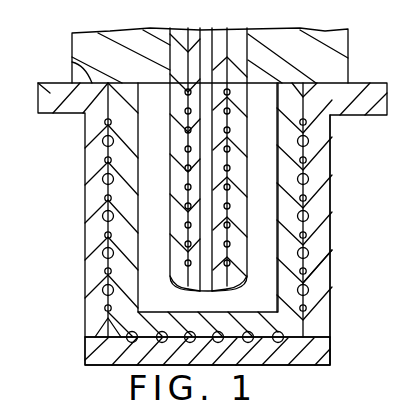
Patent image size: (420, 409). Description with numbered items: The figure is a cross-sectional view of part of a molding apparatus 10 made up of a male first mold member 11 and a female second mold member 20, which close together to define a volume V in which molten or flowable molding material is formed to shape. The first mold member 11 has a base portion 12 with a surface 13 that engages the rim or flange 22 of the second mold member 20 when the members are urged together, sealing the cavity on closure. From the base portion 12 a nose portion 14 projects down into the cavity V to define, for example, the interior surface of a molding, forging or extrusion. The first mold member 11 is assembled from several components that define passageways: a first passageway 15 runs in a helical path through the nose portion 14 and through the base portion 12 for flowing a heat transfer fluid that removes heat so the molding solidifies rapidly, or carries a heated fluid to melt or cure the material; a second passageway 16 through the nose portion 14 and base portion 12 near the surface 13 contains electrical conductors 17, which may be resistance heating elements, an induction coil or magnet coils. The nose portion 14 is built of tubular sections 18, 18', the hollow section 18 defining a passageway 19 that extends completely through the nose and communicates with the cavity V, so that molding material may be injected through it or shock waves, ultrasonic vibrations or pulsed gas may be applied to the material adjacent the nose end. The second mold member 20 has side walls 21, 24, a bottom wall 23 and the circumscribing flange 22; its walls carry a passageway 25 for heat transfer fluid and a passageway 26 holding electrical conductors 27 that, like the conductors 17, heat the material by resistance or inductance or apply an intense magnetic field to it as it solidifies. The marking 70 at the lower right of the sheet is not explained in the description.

The molding apparatus 10 is at (354, 53).
The first mold member 11 is at (348, 30).
The base portion 12 is at (342, 69).
The surface 13 is at (72, 58).
The nose portion 14 is at (318, 262).
The first passageway 15 is at (170, 172).
The second passageway 16 is at (187, 201).
The electrical conductors 17 is at (176, 284).
The section 18 is at (183, 295).
The section 18' is at (252, 278).
The passageway 19 is at (215, 291).
The second mold member 20 is at (331, 183).
The side wall 21 is at (120, 113).
The flange 22 is at (376, 100).
The bottom wall 23 is at (333, 347).
The side wall 24 is at (333, 228).
The passageway 25 is at (310, 290).
The passageway 26 is at (313, 313).
The conductors 27 is at (228, 237).
The reference numeral 70 is at (419, 378).
The volume V is at (263, 152).